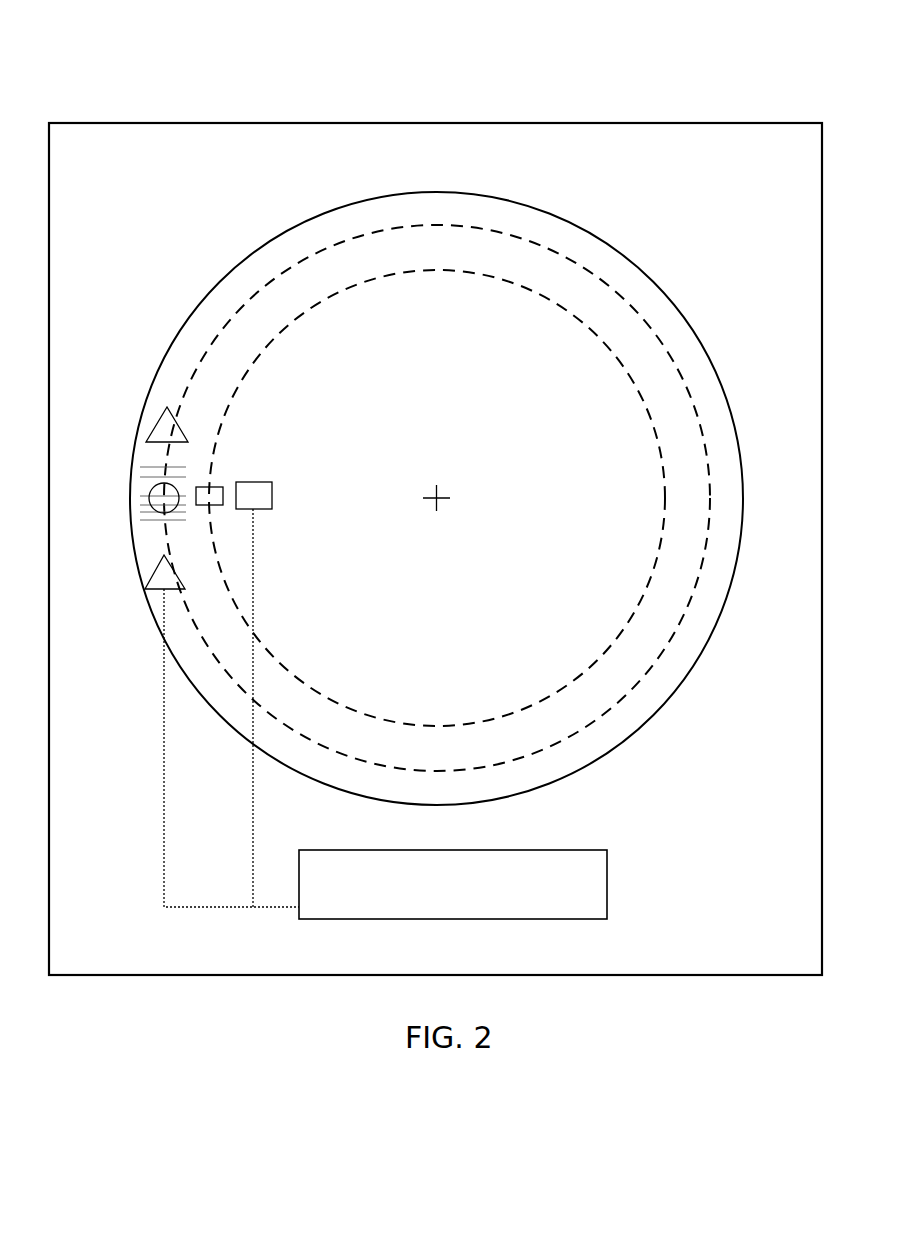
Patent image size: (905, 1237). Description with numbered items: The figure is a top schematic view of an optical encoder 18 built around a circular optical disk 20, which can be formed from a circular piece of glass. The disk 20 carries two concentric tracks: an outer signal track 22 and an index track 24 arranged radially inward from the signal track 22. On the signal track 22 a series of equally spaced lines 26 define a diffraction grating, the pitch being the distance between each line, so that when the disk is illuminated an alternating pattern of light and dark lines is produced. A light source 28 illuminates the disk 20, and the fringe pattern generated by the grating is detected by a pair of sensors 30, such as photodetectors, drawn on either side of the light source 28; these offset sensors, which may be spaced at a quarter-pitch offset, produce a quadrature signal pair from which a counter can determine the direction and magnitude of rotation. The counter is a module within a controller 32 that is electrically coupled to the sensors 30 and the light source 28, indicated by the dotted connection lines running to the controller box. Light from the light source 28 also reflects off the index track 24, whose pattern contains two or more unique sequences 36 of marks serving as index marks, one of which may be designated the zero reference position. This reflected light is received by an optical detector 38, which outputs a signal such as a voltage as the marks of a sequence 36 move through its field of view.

The optical encoder 18 is at (260, 125).
The optical disk 20 is at (636, 268).
The signal track 22 is at (277, 278).
The index track 24 is at (290, 323).
The lines 26 is at (122, 470).
The light source 28 is at (150, 503).
The sensors 30 is at (165, 422).
The controller 32 is at (608, 892).
The sequences 36 is at (220, 487).
The optical detector 38 is at (272, 510).